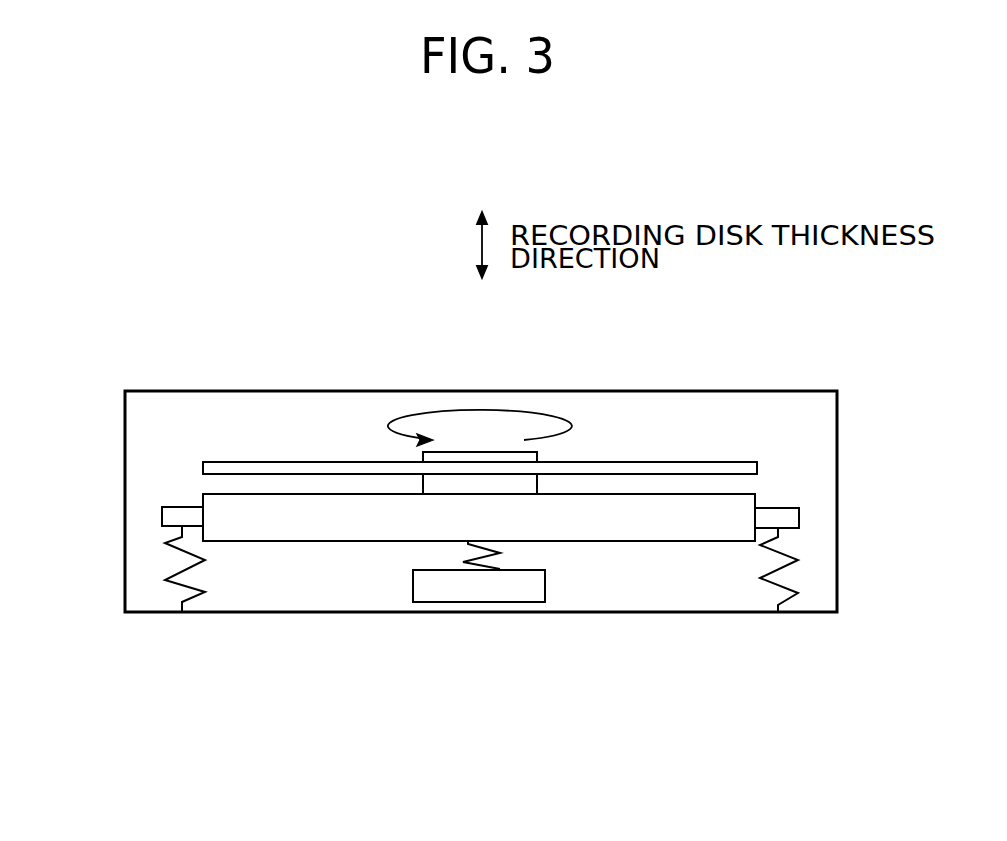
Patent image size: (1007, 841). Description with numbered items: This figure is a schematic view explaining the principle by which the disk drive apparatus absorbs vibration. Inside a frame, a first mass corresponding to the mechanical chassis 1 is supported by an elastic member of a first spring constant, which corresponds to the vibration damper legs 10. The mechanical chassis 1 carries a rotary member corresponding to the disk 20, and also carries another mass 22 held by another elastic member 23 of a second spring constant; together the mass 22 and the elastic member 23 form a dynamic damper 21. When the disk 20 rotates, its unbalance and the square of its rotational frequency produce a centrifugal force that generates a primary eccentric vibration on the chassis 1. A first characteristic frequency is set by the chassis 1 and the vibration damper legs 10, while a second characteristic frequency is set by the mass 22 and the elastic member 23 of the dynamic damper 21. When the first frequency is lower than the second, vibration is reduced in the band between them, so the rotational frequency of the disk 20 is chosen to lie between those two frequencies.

The mechanical chassis 1 is at (662, 541).
The vibration damper legs 10 is at (172, 574).
The disk 20 is at (633, 463).
The dynamic damper 21 is at (456, 630).
The mass 22 is at (508, 602).
The elastic member 23 is at (468, 551).